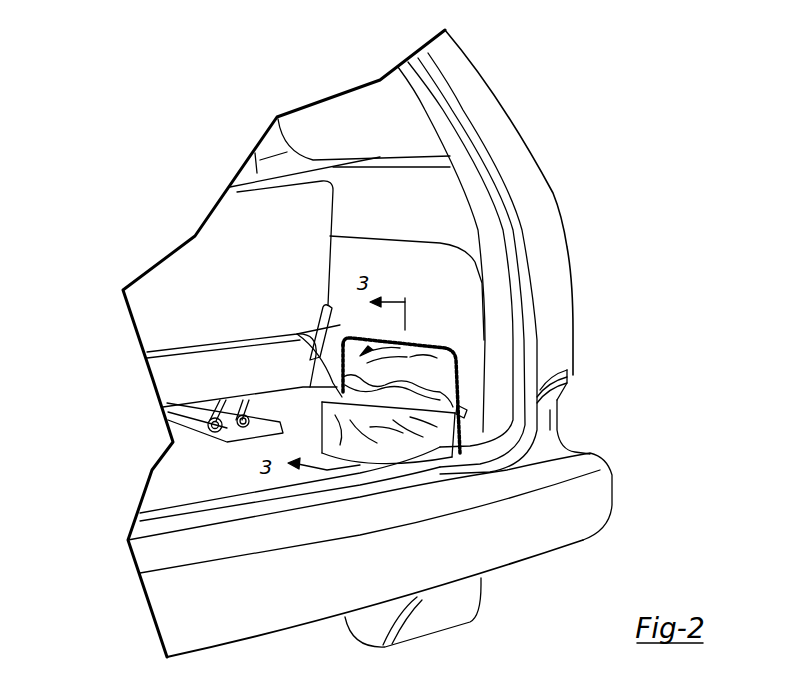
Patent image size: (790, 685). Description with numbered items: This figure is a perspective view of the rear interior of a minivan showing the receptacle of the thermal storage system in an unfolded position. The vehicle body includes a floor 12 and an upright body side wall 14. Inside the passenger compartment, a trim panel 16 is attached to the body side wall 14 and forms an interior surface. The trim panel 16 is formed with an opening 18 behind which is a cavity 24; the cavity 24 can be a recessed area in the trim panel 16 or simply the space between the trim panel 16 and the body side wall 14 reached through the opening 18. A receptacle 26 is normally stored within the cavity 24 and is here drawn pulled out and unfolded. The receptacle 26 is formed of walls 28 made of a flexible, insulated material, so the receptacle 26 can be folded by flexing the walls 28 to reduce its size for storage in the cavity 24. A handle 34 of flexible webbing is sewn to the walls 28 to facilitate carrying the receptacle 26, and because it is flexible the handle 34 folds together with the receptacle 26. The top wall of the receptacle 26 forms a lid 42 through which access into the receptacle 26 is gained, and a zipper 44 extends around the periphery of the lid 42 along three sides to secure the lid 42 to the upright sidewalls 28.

The floor 12 is at (177, 477).
The upright body side wall 14 is at (520, 127).
The trim panel 16 is at (443, 278).
The opening 18 is at (457, 353).
The cavity 24 is at (343, 336).
The receptacle 26 is at (460, 440).
The walls 28 is at (381, 447).
The handle 34 is at (453, 413).
The lid 42 is at (277, 348).
The zipper 44 is at (567, 383).